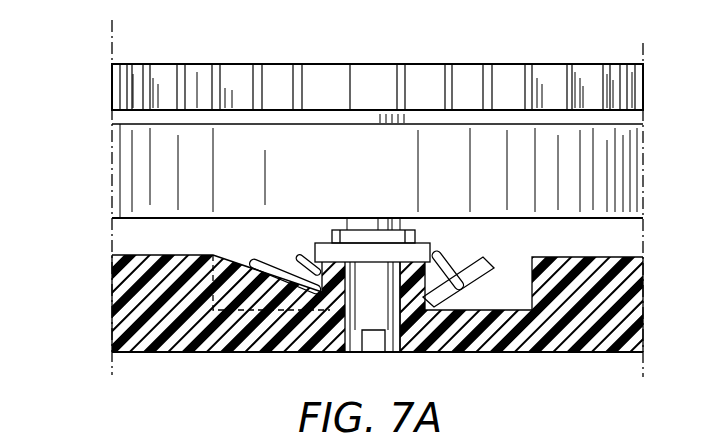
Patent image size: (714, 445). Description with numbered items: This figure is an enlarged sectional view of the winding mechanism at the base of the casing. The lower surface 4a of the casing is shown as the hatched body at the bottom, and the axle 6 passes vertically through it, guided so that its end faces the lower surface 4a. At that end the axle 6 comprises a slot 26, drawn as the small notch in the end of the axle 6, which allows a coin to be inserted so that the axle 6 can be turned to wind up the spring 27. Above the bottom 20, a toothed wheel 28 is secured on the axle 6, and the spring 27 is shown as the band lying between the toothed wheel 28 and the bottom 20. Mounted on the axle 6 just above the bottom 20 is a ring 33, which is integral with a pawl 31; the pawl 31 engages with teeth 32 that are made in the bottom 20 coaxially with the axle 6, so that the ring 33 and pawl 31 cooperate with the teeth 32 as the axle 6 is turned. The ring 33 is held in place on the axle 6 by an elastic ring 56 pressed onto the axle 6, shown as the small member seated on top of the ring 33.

The toothed wheel 28 is at (392, 72).
The spring 27 is at (160, 163).
The bottom 20 is at (160, 255).
The lower surface 4a is at (561, 360).
The ring 33 is at (380, 252).
The elastic ring 56 is at (333, 235).
The axle 6 is at (355, 298).
The slot 26 is at (372, 331).
The pawl 31 is at (438, 258).
The teeth 32 is at (507, 288).